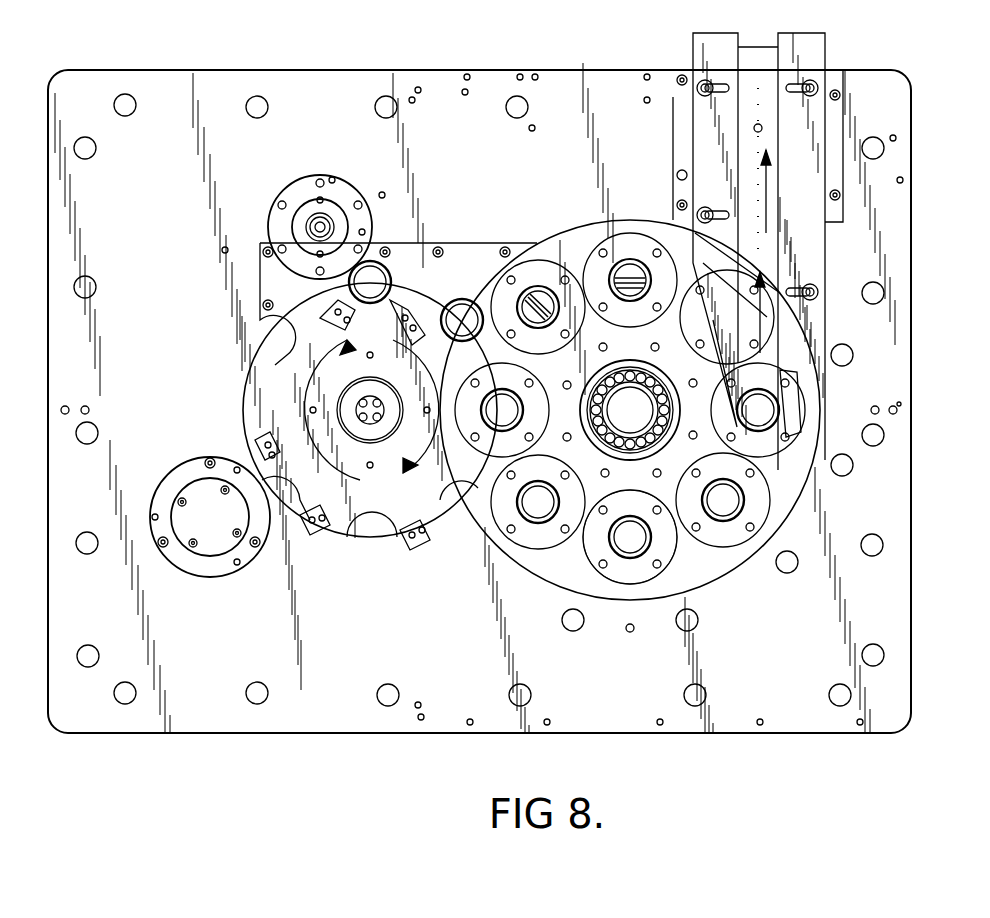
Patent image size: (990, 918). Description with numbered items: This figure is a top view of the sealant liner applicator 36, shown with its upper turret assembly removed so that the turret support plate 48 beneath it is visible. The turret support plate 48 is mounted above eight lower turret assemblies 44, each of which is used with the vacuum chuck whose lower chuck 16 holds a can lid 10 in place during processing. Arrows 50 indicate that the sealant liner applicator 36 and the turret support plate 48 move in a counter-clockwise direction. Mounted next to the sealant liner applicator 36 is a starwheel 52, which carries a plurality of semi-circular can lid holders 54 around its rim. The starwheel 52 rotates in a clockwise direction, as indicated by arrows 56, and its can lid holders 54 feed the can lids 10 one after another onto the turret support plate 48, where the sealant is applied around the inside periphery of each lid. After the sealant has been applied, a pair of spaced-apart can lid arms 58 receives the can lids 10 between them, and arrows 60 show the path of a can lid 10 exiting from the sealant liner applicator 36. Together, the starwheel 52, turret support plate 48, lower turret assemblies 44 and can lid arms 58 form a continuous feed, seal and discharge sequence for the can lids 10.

The can lid 10 is at (370, 282).
The lower chuck 16 is at (632, 539).
The sealant liner applicator 36 is at (495, 178).
The lower turret assembly 44 is at (533, 308).
The turret support plate 48 is at (548, 262).
The arrows 50 is at (617, 166).
The starwheel 52 is at (280, 377).
The can lid holders 54 is at (287, 330).
The arrows 56 is at (300, 382).
The can lid arms 58 is at (705, 167).
The arrows 60 is at (768, 197).